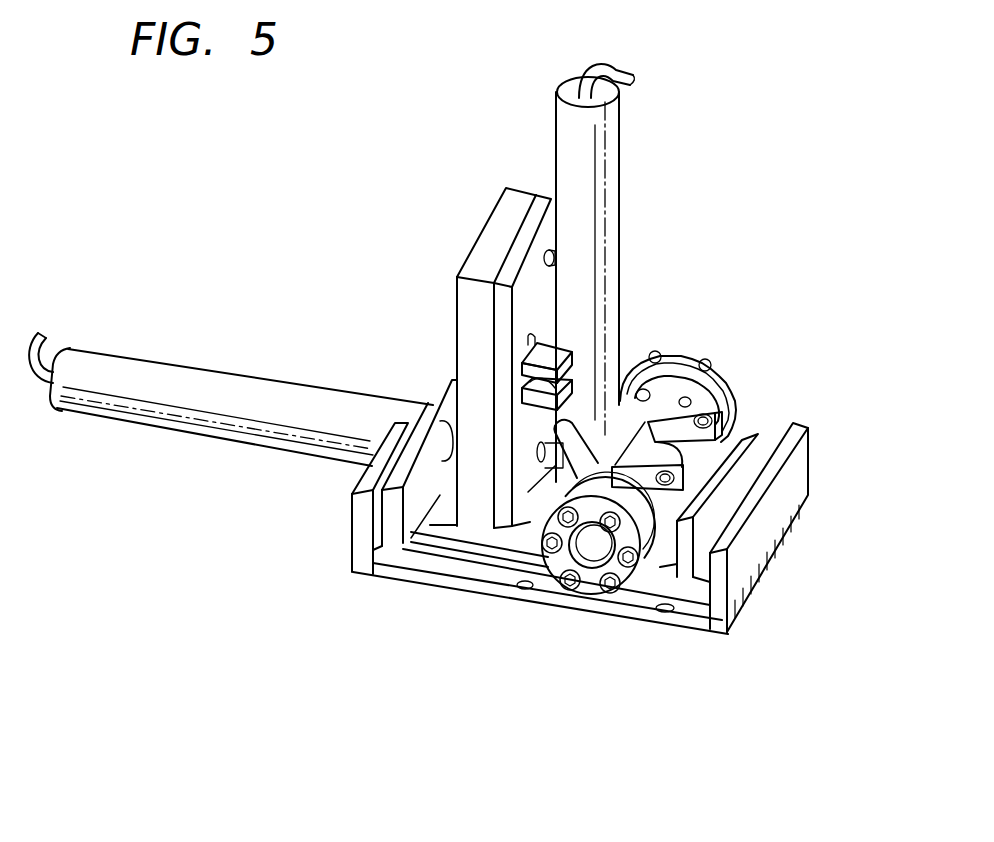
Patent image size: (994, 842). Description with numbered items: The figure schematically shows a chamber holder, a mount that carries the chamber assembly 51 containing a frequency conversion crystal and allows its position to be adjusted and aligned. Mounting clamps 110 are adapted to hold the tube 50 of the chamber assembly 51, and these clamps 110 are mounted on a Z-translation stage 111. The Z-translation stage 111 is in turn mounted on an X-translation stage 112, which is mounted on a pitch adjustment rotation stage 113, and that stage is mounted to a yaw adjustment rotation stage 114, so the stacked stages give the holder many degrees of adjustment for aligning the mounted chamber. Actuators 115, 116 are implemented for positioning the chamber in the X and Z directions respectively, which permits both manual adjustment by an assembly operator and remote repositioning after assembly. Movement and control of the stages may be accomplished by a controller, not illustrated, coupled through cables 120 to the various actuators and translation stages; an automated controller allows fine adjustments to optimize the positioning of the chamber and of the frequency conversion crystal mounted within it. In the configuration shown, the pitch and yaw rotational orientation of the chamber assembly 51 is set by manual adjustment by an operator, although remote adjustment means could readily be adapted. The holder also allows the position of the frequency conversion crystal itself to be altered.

The tube 50 is at (645, 440).
The chamber assembly 51 is at (702, 382).
The mounting clamps 110 is at (660, 540).
The Z-translation stage 111 is at (526, 290).
The X-translation stage 112 is at (463, 297).
The pitch adjustment rotation stage 113 is at (437, 556).
The yaw adjustment rotation stage 114 is at (807, 418).
The actuator 115 is at (173, 418).
The actuator 116 is at (602, 187).
The cables 120 is at (620, 67).